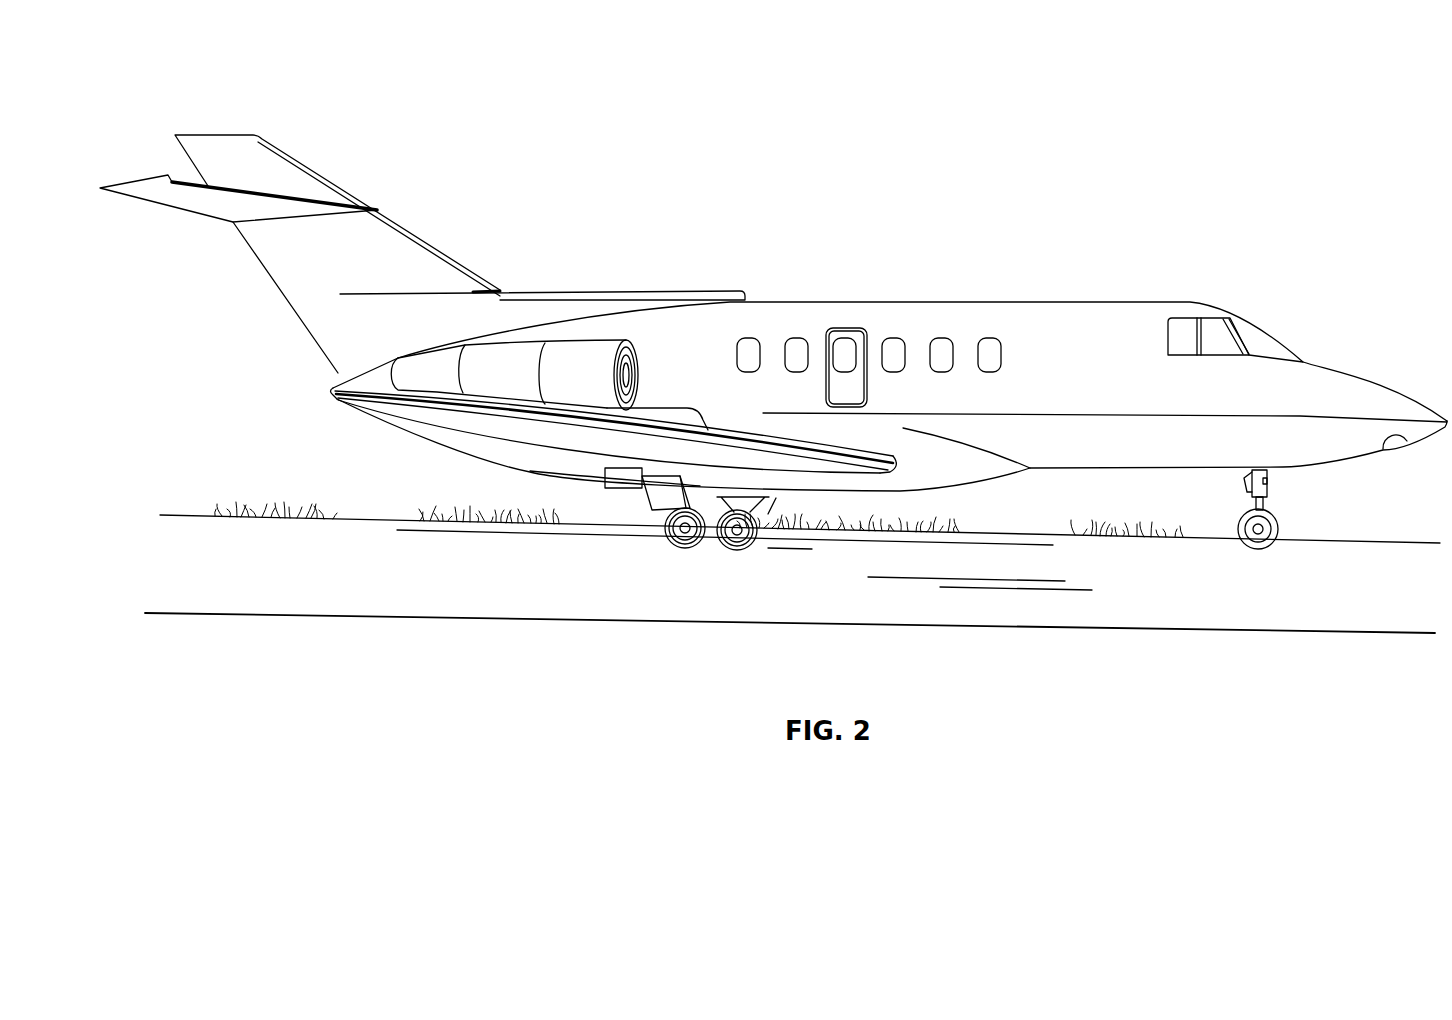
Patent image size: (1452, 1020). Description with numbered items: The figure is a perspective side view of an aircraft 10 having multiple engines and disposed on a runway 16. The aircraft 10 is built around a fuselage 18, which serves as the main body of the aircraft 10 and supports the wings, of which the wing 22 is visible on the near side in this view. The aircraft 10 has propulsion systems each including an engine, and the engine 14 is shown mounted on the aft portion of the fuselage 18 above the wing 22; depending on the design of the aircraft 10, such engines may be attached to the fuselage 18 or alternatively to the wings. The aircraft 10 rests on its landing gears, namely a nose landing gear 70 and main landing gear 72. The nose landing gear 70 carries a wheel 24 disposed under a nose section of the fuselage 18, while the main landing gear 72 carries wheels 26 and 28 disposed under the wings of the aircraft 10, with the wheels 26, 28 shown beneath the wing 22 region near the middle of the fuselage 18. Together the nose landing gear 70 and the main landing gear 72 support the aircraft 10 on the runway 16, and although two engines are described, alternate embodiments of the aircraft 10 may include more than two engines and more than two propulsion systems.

The aircraft 10 is at (773, 370).
The engine 14 is at (525, 352).
The runway 16 is at (918, 607).
The fuselage 18 is at (1073, 320).
The wing 22 is at (632, 442).
The wheel 24 is at (1273, 545).
The wheel 26 is at (691, 537).
The wheel 28 is at (746, 540).
The nose landing gear 70 is at (1267, 490).
The main landing gear 72 is at (767, 520).